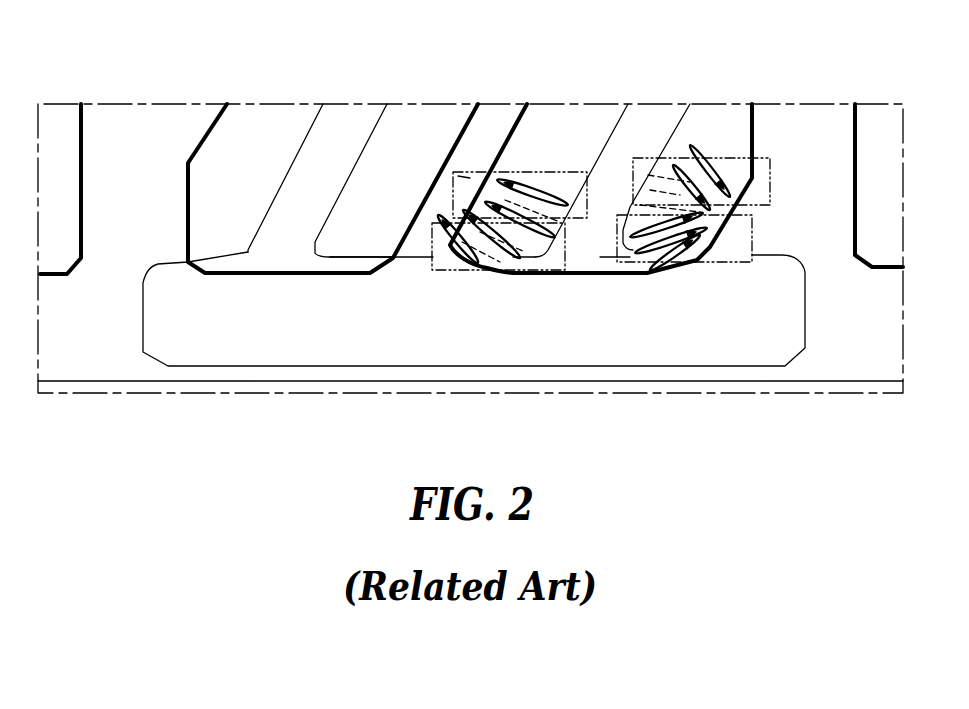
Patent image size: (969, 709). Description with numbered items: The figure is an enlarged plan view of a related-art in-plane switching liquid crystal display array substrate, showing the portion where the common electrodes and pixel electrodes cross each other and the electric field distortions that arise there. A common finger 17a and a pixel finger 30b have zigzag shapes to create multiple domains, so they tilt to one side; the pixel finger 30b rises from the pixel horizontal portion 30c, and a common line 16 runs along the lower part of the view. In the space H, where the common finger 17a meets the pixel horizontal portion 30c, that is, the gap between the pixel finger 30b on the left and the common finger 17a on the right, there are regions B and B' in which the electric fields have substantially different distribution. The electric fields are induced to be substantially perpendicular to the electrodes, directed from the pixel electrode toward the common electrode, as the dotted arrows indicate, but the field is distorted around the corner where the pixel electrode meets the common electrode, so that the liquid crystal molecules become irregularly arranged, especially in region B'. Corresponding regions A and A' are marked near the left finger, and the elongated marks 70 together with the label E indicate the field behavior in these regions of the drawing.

The common line 16 is at (810, 381).
The common finger 17a is at (498, 116).
The pixel finger 30b is at (348, 116).
The pixel horizontal portion 30c is at (805, 313).
The etch residue 70 is at (717, 170).
The region A is at (491, 195).
The region A' is at (498, 278).
The region B is at (733, 181).
The region B' is at (719, 238).
The etching residue region E is at (537, 190).
The space H is at (468, 123).